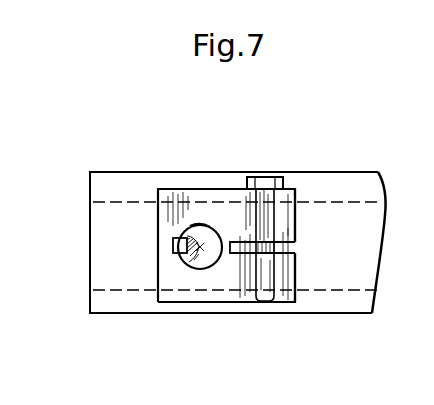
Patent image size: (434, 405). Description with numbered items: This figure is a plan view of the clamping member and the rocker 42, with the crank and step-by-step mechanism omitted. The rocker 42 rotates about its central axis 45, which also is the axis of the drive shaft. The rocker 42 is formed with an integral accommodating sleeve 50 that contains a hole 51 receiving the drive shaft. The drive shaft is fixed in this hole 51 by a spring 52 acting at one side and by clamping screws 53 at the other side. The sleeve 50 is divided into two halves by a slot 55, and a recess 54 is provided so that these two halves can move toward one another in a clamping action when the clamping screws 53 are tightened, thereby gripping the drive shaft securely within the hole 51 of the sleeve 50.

The rocker 42 is at (98, 300).
The axis 45 is at (198, 250).
The accommodating sleeve 50 is at (178, 282).
The hole 51 is at (203, 225).
The spring 52 is at (173, 247).
The clamping screws 53 is at (264, 186).
The recess 54 is at (297, 195).
The slot 55 is at (288, 250).